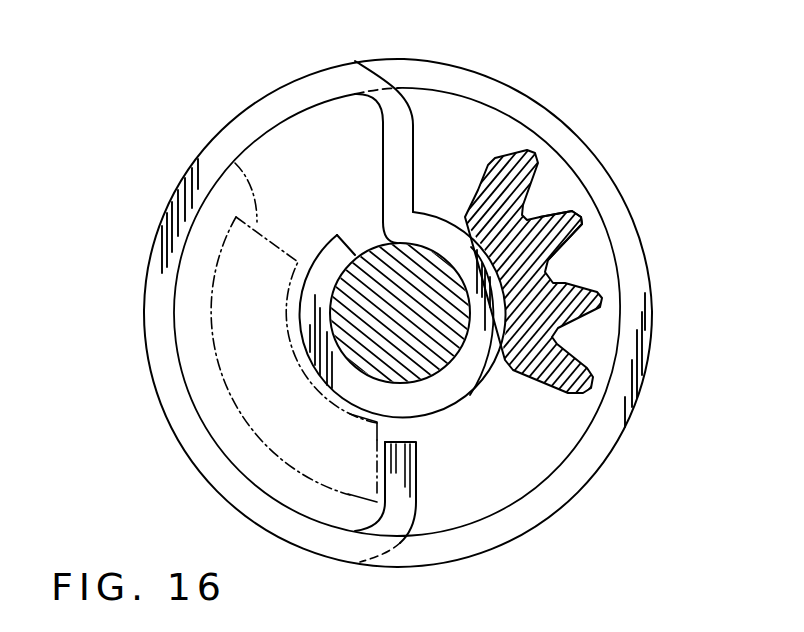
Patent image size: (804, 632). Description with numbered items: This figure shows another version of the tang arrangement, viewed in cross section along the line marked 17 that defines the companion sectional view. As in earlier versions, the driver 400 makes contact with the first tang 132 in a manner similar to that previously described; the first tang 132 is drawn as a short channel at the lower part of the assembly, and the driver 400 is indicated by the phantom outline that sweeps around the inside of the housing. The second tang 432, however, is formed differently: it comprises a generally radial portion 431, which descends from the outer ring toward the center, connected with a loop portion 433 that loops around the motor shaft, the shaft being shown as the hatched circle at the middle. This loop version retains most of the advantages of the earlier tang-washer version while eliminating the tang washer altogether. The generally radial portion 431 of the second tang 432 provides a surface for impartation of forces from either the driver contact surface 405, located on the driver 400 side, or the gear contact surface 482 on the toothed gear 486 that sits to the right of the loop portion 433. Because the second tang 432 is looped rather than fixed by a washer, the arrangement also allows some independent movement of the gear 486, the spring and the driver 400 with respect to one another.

The driver contact surface 405 is at (240, 167).
The generally radial portion 431 is at (401, 153).
The second tang 432 is at (400, 183).
The loop portion 433 is at (443, 390).
The gear contact surface 482 is at (480, 176).
The gear 486 is at (588, 254).
The driver 400 is at (380, 428).
The first tang 132 is at (407, 487).
The section line 17- 17 is at (413, 66).